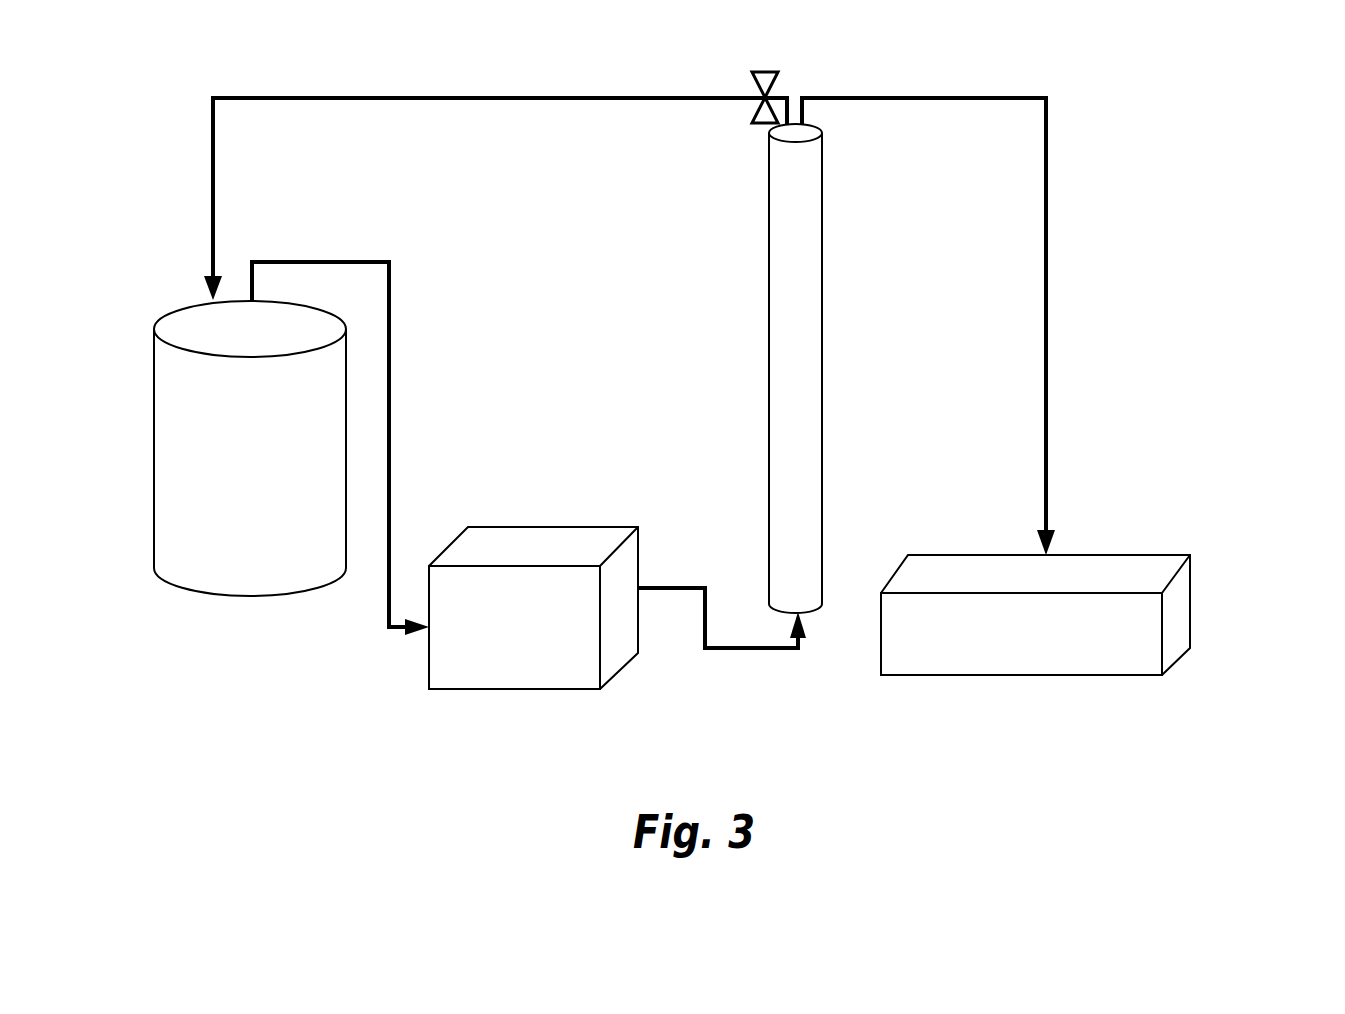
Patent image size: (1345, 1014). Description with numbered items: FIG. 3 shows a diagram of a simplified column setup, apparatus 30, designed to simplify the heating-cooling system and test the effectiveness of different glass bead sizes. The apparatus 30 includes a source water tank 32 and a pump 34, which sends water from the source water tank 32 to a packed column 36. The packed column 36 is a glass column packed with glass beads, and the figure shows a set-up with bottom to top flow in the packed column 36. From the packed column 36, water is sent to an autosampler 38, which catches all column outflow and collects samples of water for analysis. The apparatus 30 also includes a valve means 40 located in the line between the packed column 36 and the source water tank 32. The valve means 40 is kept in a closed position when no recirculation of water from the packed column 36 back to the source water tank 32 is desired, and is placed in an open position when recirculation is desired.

The apparatus 30 is at (1233, 174).
The source water tank 32 is at (162, 408).
The pump 34 is at (568, 540).
The packed column 36 is at (780, 408).
The autosampler 38 is at (1013, 565).
The valve means 40 is at (763, 70).